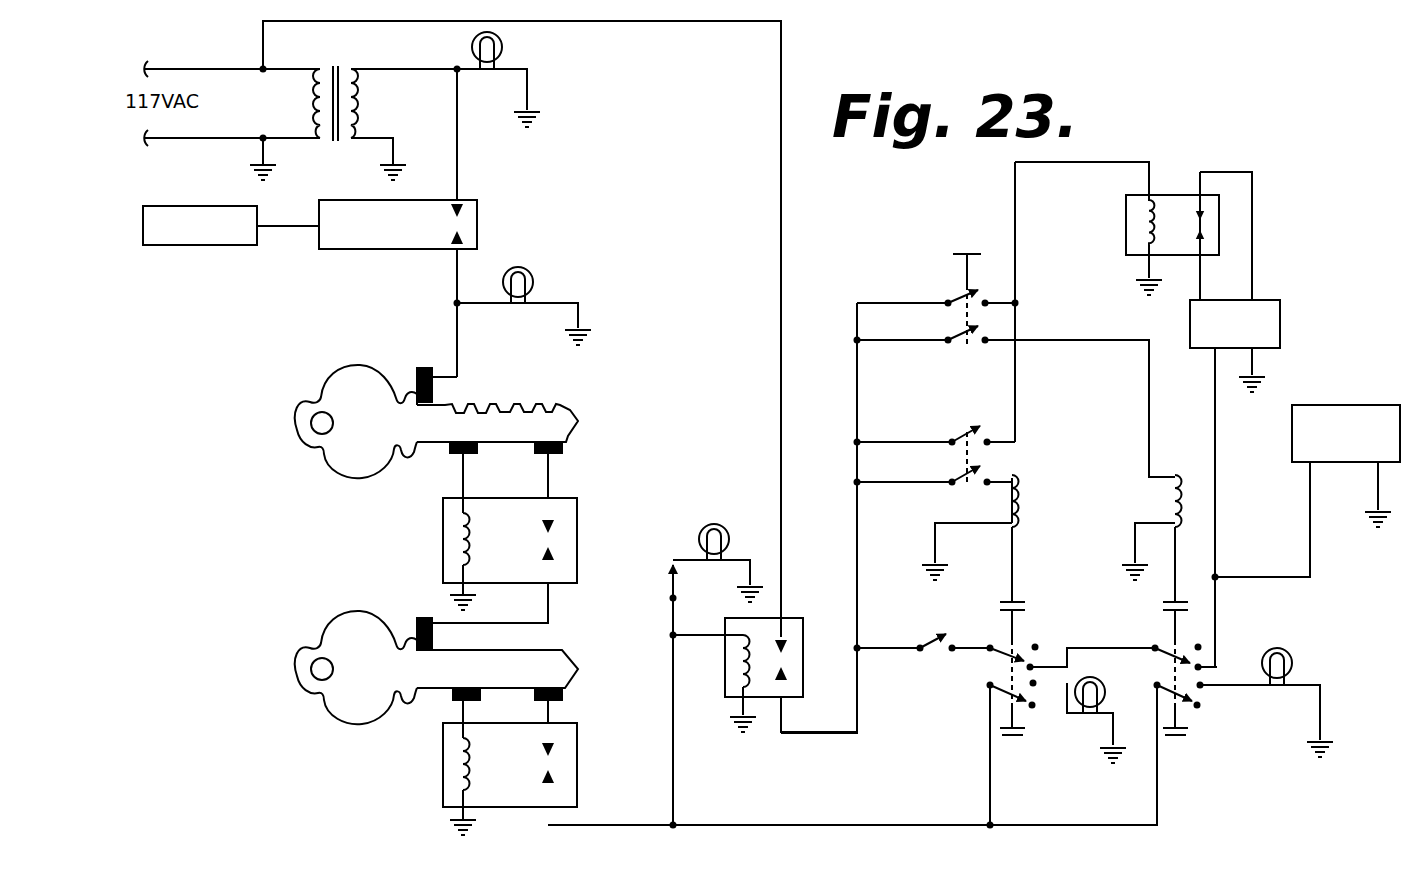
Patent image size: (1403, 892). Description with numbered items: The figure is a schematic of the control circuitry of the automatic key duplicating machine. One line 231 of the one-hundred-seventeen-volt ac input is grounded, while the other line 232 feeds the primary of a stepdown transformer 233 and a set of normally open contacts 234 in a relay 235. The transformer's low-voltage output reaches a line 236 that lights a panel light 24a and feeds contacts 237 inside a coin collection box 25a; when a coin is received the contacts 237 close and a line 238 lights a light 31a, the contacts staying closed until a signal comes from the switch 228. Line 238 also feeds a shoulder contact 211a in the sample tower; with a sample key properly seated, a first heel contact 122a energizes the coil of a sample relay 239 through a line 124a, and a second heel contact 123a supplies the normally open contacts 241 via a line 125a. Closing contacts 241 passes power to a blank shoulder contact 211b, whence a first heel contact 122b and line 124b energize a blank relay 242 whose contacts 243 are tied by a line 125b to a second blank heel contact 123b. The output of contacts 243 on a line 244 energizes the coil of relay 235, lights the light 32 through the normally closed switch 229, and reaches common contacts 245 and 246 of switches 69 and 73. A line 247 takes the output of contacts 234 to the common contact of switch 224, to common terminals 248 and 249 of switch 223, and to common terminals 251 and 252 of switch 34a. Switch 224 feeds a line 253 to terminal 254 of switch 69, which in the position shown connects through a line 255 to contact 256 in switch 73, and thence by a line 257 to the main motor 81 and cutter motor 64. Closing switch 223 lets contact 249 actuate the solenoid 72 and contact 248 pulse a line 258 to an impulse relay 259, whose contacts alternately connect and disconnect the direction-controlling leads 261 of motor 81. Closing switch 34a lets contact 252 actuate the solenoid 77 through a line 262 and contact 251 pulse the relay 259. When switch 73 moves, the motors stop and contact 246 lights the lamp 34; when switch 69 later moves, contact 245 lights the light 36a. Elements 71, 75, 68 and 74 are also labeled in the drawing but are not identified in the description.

The line 232 is at (188, 69).
The stepdown transformer 233 is at (338, 66).
The light 24a is at (503, 48).
The line 231 is at (167, 140).
The line 236 is at (459, 172).
The contacts 237 is at (466, 224).
The switch 228 is at (165, 247).
The coin collection box 25a is at (318, 238).
The line 238 is at (455, 268).
The light 31a is at (533, 277).
The shoulder contact 211a is at (412, 375).
The second heel contact 123a is at (562, 446).
The line 125a is at (550, 478).
The first heel contact 122a is at (448, 452).
The line 124a is at (460, 475).
The sample relay 239 is at (443, 535).
The normally open contacts 241 is at (557, 540).
The blank shoulder contact 211b is at (412, 625).
The second blank heel contact 123b is at (563, 692).
The line 125b is at (550, 712).
The first heel contact 122b is at (452, 698).
The line 124b is at (462, 712).
The blank relay 242 is at (443, 775).
The normally open contacts 243 is at (557, 763).
The light 32 is at (700, 535).
The normally closed switch 229 is at (671, 585).
The relay 235 is at (790, 618).
The normally open contacts 234 is at (788, 660).
The line 244 is at (676, 783).
The line 247 is at (860, 718).
The switch 34a is at (962, 272).
The common terminal 251 is at (946, 300).
The common terminal 252 is at (946, 338).
The line 258 is at (1107, 162).
The line 262 is at (1025, 340).
The impulse relay 259 is at (1165, 195).
The direction controlling leads 261 is at (1203, 278).
The main motor 81 is at (1280, 300).
The line 257 is at (1222, 577).
The cutter motor 64 is at (1335, 405).
The switch 223 is at (960, 438).
The common contact 245 is at (952, 443).
The common terminal 249 is at (950, 484).
The solenoid 72 is at (1017, 506).
The solenoid 77 is at (1170, 505).
The relay armature 71 is at (1017, 620).
The relay armature 75 is at (1178, 637).
The relay contact 68 is at (1005, 736).
The relay contact 74 is at (1182, 736).
The switch 224 is at (938, 638).
The line 253 is at (962, 650).
The terminal 254 is at (988, 646).
The line 255 is at (1073, 650).
The contact 256 is at (1155, 646).
The common terminal 248 is at (988, 688).
The switch 69 is at (1018, 704).
The light 36a is at (1092, 682).
The common contact 246 is at (1155, 690).
The switch 73 is at (1180, 708).
The lamp 34 is at (1292, 657).